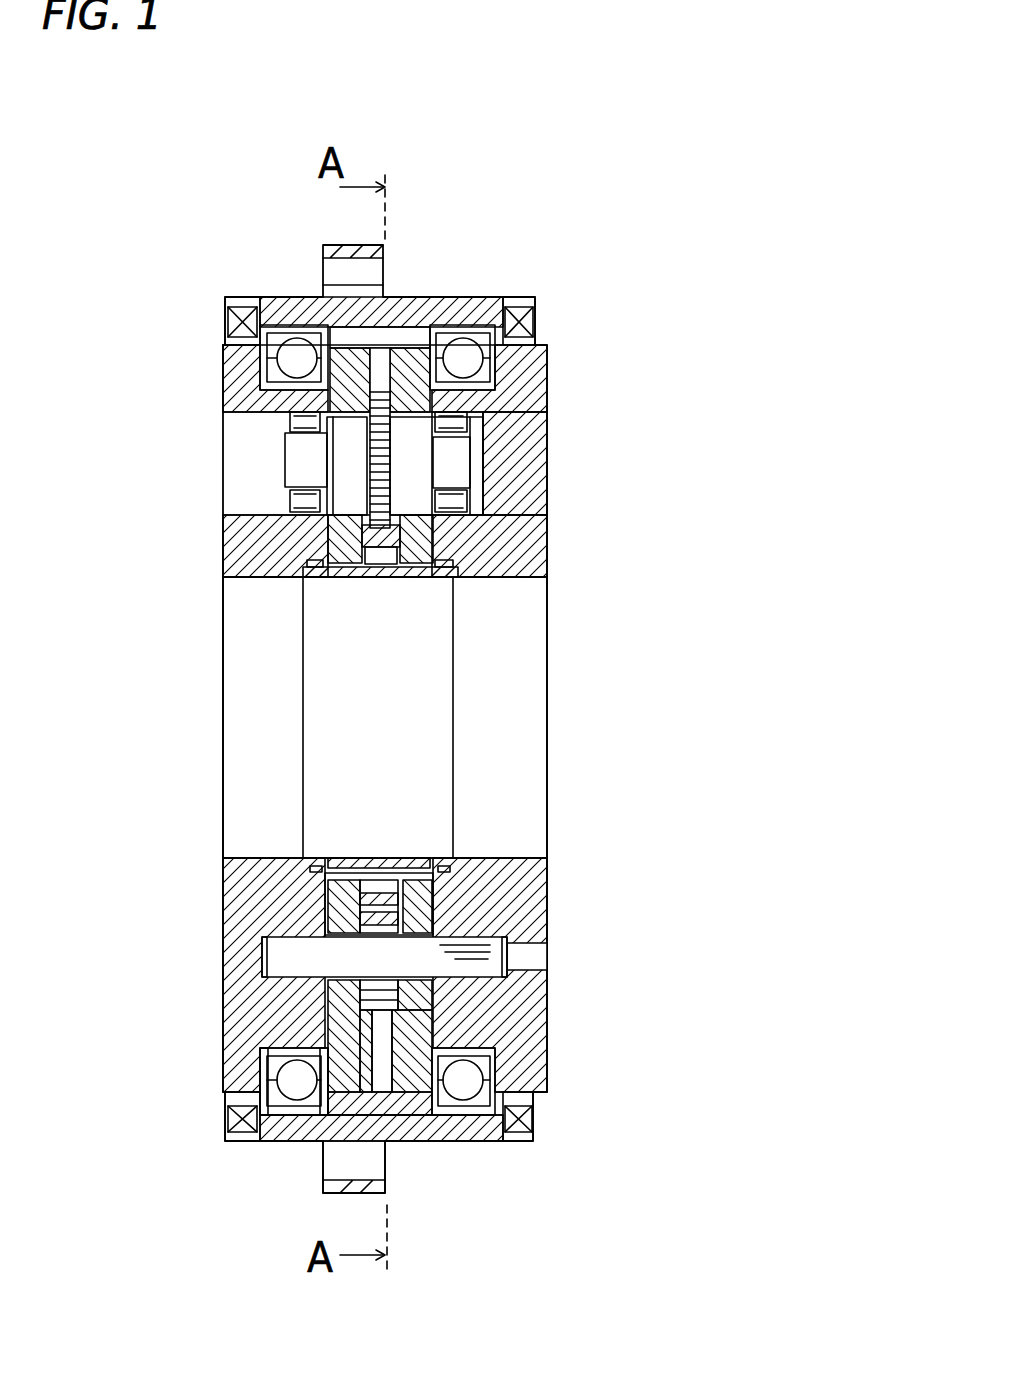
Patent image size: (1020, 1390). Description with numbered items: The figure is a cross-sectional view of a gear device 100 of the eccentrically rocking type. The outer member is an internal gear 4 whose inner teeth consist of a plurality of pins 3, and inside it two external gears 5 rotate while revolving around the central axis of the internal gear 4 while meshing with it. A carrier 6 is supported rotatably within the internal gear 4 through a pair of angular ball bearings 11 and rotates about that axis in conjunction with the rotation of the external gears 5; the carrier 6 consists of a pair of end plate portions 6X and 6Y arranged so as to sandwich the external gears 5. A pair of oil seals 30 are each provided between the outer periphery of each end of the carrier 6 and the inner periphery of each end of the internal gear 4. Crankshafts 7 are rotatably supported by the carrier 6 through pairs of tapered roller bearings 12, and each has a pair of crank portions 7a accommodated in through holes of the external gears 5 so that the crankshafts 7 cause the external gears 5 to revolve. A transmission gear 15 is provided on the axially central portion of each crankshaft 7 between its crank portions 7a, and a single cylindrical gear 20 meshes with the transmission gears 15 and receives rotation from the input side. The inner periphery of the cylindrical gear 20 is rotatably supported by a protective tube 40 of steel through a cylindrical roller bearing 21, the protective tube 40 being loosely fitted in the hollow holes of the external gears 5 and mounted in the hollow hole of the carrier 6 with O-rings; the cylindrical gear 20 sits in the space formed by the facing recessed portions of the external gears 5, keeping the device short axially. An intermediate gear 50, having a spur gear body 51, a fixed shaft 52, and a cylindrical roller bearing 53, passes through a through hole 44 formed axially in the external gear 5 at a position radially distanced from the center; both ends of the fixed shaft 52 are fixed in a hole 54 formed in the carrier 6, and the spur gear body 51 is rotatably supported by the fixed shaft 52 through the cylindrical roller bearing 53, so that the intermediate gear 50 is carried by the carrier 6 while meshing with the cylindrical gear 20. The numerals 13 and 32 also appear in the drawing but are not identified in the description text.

The gear device 100 is at (514, 154).
The pins 3 is at (388, 1100).
The internal gear 4 is at (487, 1141).
The external gears 5 is at (332, 1098).
The carrier 6 is at (545, 1062).
The end plate portion 6X is at (518, 900).
The end plate portion 6Y is at (232, 890).
The crankshafts 7 is at (350, 467).
The crank portions 7a is at (352, 466).
The angular ball bearings 11 is at (295, 345).
The tapered roller bearings 12 is at (305, 420).
The stator core 13 is at (410, 500).
The transmission gears 15 is at (386, 395).
The cylindrical gear 20 is at (366, 577).
The cylindrical roller bearing 21 is at (390, 577).
The oil seals 30 is at (240, 322).
The spacer 32 is at (313, 553).
The protective tube 40 is at (363, 567).
The through hole 44 is at (422, 942).
The intermediate gear 50 is at (352, 1118).
The spur gear body 51 is at (324, 1081).
The fixed shaft 52 is at (360, 988).
The cylindrical roller bearing 53 is at (345, 1005).
The hole 54 is at (318, 958).